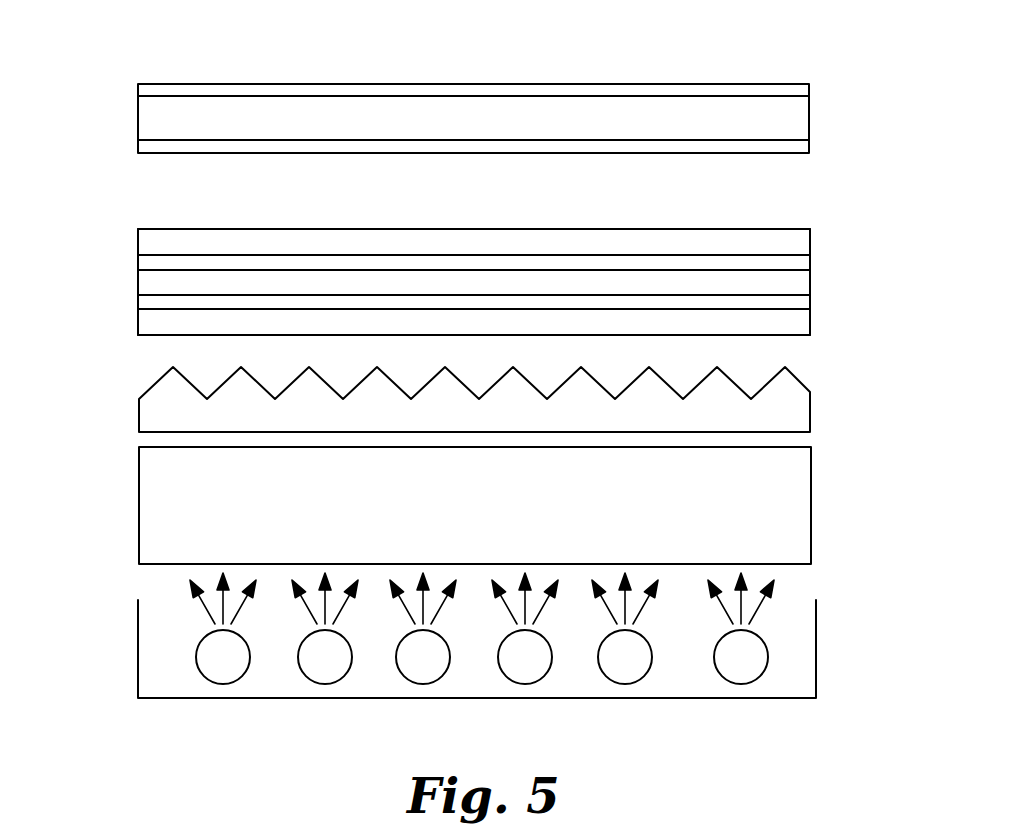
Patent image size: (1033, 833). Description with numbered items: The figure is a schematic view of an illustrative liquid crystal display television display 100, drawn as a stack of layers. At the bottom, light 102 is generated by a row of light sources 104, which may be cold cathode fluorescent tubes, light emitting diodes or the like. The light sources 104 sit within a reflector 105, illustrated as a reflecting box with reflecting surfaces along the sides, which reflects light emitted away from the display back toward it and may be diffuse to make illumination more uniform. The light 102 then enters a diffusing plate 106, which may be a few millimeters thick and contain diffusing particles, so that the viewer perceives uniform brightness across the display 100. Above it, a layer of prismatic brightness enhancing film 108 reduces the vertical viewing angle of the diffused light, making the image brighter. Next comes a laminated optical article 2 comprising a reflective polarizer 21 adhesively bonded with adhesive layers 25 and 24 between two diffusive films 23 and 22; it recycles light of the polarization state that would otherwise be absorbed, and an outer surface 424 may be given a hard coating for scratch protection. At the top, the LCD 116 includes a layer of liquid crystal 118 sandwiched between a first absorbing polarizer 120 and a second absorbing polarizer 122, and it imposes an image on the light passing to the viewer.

The display 100 is at (190, 40).
The LCD 116 is at (809, 114).
The first absorbing polarizer 120 is at (138, 88).
The layer of liquid crystal 118 is at (138, 116).
The second absorbing polarizer 122 is at (138, 143).
The laminated optical article 2 is at (449, 282).
The outer surface 424 is at (274, 228).
The diffusive film 23 is at (781, 240).
The adhesive layer 25 is at (800, 262).
The reflective polarizer 21 is at (794, 283).
The adhesive layer 24 is at (800, 303).
The diffusive film 22 is at (798, 325).
The prismatic brightness enhancing film 108 is at (811, 406).
The diffusing plate 106 is at (138, 497).
The reflector 105 is at (527, 699).
The light sources 104 is at (765, 645).
The light 102 is at (207, 613).